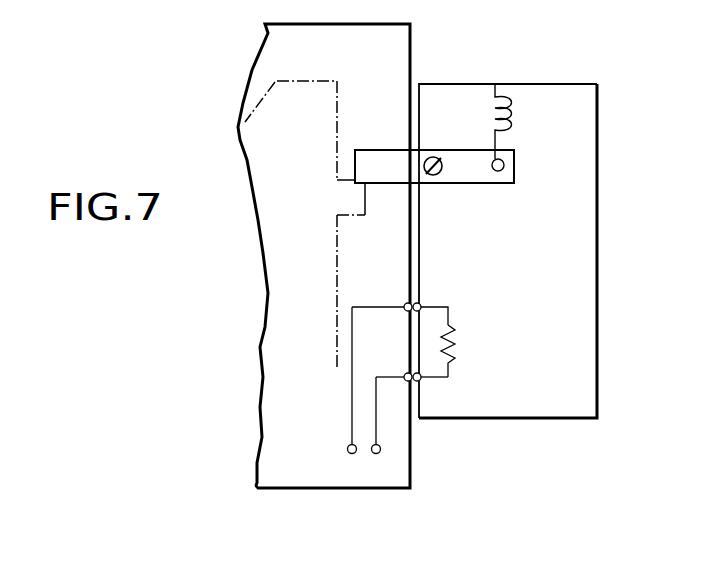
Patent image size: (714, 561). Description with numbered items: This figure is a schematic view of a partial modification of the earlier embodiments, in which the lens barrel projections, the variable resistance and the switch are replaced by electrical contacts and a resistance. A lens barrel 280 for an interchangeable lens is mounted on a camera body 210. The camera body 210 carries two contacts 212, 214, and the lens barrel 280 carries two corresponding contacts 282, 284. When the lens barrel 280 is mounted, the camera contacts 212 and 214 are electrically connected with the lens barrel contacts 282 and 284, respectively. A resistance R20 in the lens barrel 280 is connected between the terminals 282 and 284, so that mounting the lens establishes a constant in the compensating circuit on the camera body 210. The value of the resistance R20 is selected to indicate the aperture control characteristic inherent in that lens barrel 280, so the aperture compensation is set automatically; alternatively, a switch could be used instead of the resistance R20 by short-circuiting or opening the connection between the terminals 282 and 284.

The camera body 210 is at (293, 24).
The lens barrel 280 is at (547, 84).
The contact 212 is at (405, 303).
The contact 282 is at (420, 303).
The resistance R20 is at (453, 333).
The contact 284 is at (420, 381).
The contact 214 is at (405, 374).